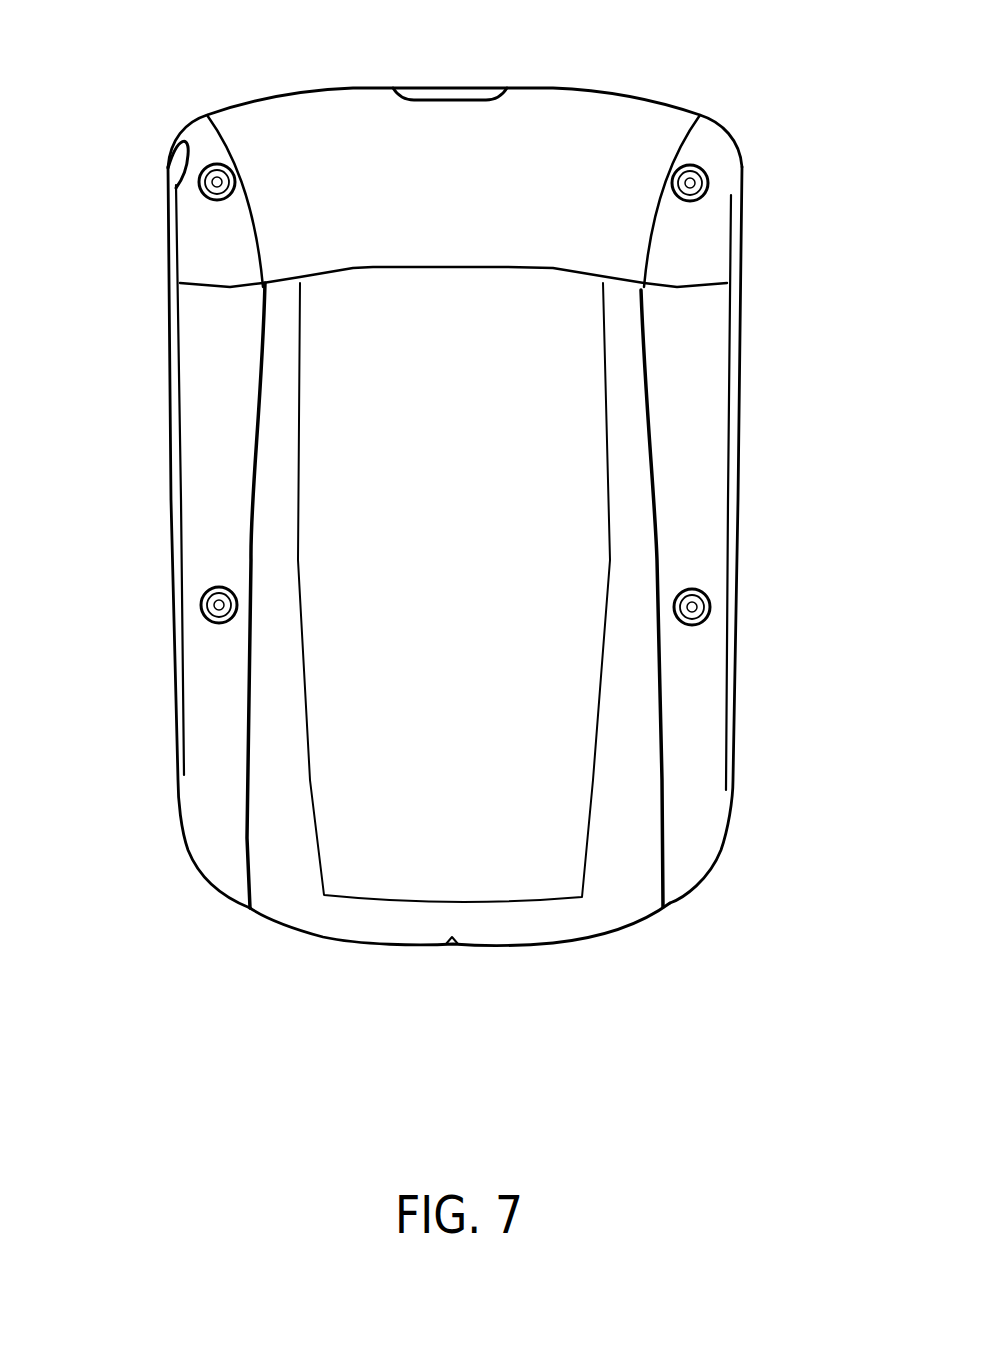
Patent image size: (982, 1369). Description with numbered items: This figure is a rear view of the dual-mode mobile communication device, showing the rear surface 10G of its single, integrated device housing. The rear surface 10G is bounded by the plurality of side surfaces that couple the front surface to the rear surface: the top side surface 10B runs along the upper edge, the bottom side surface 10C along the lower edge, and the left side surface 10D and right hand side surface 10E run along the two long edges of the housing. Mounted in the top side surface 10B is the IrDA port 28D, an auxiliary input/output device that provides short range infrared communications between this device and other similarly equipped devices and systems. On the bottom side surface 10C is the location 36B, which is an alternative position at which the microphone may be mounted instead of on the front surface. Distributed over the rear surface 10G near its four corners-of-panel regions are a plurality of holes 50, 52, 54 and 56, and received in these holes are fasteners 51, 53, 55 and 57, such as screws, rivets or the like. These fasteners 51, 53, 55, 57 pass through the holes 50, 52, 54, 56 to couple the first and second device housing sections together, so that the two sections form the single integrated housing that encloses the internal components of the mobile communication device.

The top side surface 10B is at (587, 88).
The bottom side surface 10C is at (553, 943).
The left side surface 10D is at (740, 480).
The right hand side surface 10E is at (170, 455).
The rear surface 10G is at (280, 360).
The IrDA port 28D is at (432, 85).
The microphone location 36B is at (452, 943).
The hole 50 is at (200, 187).
The fastener 51 is at (217, 180).
The hole 52 is at (713, 184).
The fastener 53 is at (690, 165).
The hole 54 is at (200, 598).
The fastener 55 is at (219, 625).
The hole 56 is at (697, 623).
The fastener 57 is at (710, 600).